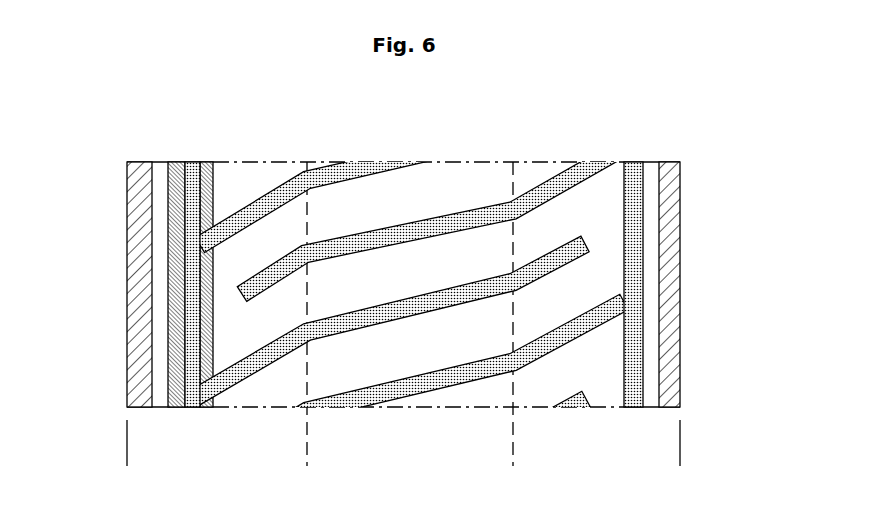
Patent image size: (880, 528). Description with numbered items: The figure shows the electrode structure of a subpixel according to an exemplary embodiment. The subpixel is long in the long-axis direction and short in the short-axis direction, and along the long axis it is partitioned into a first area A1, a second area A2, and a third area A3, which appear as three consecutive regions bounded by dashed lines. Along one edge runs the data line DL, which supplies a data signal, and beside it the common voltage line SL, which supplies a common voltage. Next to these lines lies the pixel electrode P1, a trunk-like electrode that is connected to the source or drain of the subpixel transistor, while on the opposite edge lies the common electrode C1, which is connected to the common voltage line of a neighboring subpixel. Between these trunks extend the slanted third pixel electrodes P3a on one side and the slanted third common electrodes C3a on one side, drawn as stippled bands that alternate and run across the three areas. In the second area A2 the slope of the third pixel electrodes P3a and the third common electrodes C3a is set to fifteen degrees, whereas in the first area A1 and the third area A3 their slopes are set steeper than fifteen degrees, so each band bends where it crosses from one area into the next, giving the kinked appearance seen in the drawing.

The data line DL is at (128, 174).
The common voltage line SL is at (172, 207).
The pixel electrode P1 is at (190, 305).
The third pixel electrode on one side P3a is at (274, 190).
The third common electrode on one side C3a is at (537, 189).
The common electrode C1 is at (640, 226).
The first area A1 is at (297, 442).
The second area A2 is at (317, 442).
The third area A3 is at (523, 442).